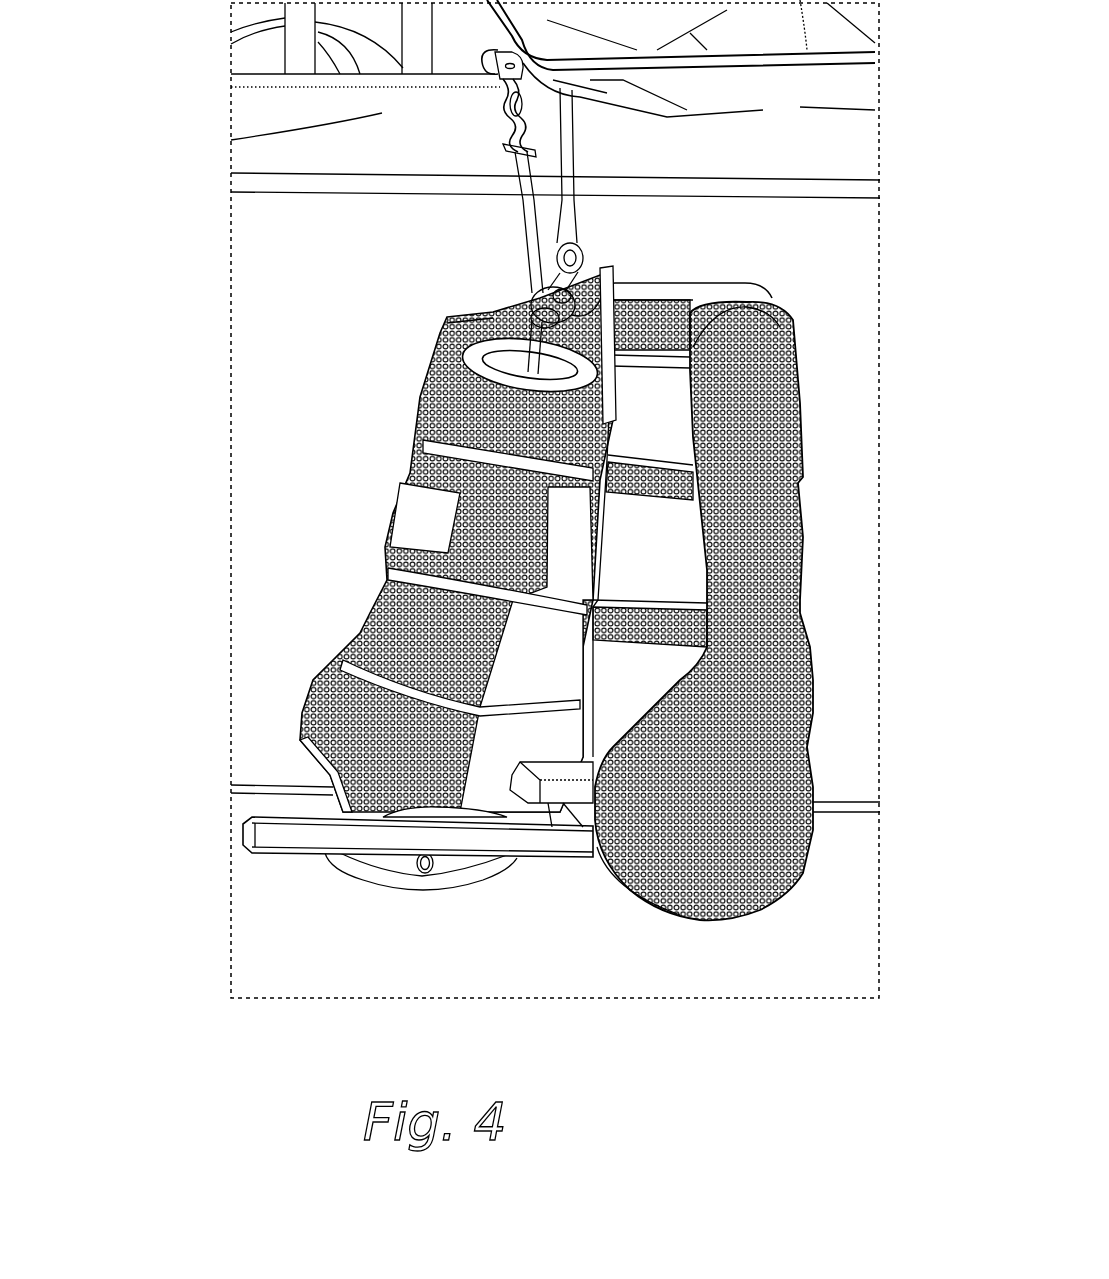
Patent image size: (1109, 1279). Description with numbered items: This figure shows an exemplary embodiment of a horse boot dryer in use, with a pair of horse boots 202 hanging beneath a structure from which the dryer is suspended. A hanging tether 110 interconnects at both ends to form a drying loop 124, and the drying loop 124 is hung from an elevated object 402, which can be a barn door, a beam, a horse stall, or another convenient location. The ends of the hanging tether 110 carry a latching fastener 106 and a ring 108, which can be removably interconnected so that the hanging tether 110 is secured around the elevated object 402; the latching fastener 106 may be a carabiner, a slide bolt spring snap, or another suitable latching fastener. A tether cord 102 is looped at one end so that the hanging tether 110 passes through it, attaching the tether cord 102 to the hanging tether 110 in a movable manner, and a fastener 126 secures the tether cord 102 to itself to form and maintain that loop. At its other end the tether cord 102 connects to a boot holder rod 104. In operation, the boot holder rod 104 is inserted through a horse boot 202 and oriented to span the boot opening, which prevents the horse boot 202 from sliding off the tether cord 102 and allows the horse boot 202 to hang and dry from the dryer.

The tether cord 102 is at (533, 335).
The boot holder rod 104 is at (288, 828).
The latching fastener 106 is at (497, 93).
The ring 108 is at (497, 93).
The hanging tether 110 is at (525, 235).
The drying loop 124 is at (612, 178).
The fastener 126 is at (505, 318).
The horse boot 202 is at (383, 628).
The elevated object 402 is at (382, 113).